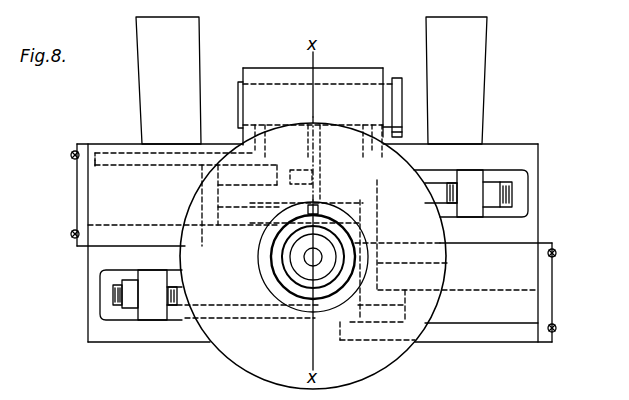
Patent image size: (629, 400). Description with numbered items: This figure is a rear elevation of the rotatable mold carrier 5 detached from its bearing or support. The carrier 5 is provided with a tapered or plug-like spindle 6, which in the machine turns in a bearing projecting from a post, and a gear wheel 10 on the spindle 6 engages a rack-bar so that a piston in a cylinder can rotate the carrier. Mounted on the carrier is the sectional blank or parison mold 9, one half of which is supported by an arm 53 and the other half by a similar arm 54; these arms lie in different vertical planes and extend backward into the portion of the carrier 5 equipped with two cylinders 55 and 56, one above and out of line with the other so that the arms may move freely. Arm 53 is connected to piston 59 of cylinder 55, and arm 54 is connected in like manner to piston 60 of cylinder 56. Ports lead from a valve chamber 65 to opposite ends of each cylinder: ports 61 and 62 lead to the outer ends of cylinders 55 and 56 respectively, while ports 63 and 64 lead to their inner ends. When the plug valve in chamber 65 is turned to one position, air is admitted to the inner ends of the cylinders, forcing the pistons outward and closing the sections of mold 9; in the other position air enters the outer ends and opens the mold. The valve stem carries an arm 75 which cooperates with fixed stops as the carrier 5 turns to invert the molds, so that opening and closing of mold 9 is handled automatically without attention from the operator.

The carrier 5 is at (313, 256).
The spindle 6 is at (276, 259).
The parison mold 9 is at (311, 80).
The gear wheel 10 is at (249, 382).
The arm 53 is at (478, 206).
The arm 54 is at (160, 320).
The cylinder 55 is at (95, 189).
The cylinder 56 is at (528, 278).
The piston 59 is at (205, 175).
The piston 60 is at (422, 279).
The port 61 is at (106, 156).
The port 62 is at (492, 292).
The port 63 is at (246, 146).
The port 64 is at (360, 150).
The valve chamber 65 is at (354, 78).
The valve arm 75 is at (404, 136).